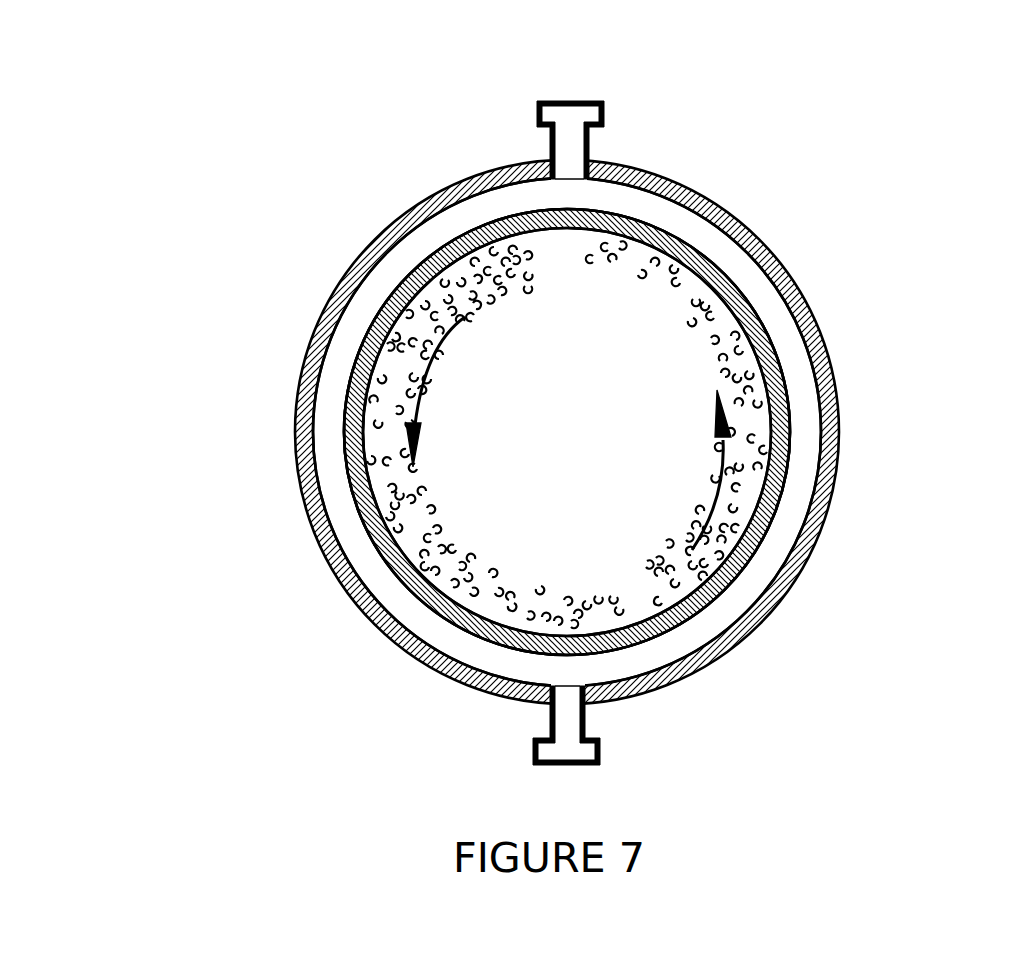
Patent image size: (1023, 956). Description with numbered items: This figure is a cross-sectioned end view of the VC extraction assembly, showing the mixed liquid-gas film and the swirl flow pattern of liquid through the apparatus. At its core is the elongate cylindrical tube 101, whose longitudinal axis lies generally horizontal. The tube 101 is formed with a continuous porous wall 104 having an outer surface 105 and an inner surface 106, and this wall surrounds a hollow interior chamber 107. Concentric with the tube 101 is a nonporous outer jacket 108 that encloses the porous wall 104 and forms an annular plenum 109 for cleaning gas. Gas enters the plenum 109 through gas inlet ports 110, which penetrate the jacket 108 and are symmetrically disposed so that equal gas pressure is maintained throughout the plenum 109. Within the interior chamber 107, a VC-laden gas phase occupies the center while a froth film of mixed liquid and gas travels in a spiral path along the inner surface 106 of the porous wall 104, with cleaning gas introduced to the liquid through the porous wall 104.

The elongate cylindrical tube 101 is at (810, 400).
The porous wall 104 is at (747, 295).
The outer surface 105 is at (757, 522).
The inner surface 106 is at (437, 250).
The hollow interior chamber 107 is at (497, 478).
The nonporous outer jacket 108 is at (416, 655).
The annular plenum 109 is at (660, 208).
The gas inlet ports 110 is at (572, 113).